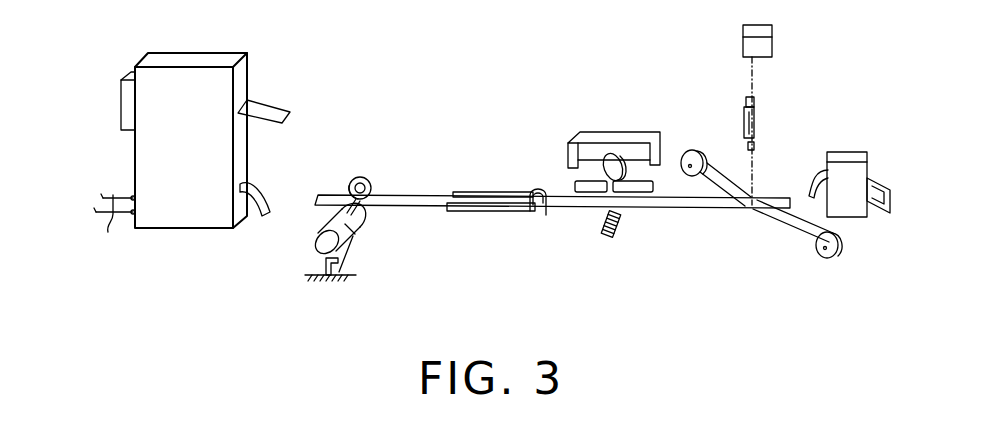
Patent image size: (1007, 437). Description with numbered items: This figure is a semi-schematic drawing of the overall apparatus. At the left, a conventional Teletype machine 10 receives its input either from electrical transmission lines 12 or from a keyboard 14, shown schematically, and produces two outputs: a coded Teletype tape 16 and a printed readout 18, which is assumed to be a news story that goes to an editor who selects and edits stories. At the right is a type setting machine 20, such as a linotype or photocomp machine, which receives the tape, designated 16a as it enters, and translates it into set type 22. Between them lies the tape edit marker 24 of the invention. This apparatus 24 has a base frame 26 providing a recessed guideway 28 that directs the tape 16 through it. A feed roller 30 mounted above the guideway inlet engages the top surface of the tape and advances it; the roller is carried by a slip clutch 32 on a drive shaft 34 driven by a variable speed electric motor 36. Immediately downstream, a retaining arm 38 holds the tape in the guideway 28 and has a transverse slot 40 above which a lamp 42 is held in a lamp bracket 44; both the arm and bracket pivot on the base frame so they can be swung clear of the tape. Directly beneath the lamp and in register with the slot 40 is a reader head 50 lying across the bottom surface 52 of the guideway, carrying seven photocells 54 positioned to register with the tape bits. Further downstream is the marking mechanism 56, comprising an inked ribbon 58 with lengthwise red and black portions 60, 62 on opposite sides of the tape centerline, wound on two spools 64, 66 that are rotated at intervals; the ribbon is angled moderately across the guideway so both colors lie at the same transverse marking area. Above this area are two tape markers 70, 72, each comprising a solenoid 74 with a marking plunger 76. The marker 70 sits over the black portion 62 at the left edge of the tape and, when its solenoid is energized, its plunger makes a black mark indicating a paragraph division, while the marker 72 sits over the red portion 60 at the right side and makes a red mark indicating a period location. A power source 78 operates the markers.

The Teletype machine 10 is at (196, 232).
The electrical transmission lines 12 is at (103, 220).
The keyboard 14 is at (121, 108).
The coded Teletype tape 16 is at (262, 218).
The Teletype tape entering the type setting machine 16a is at (818, 172).
The printed readout 18 is at (268, 112).
The type setting machine 20 is at (860, 152).
The set type 22 is at (888, 214).
The tape edit marker 24 is at (450, 149).
The base frame 26 is at (310, 273).
The recessed guideway 28 is at (463, 213).
The feed roller 30 is at (360, 177).
The slip clutch 32 is at (368, 196).
The drive shaft 34 is at (358, 216).
The variable speed electric motor 36 is at (348, 252).
The retaining arm 38 is at (575, 184).
The transverse slot 40 is at (658, 180).
The lamp 42 is at (616, 158).
The lamp bracket 44 is at (603, 140).
The reader head 50 is at (616, 236).
The bottom surface of the guideway 52 is at (544, 216).
The photocells 54 is at (620, 220).
The marking mechanism 56 is at (793, 93).
The inked ribbon 58 is at (768, 224).
The red portion of the ribbon 60 is at (790, 232).
The black portion of the ribbon 62 is at (728, 176).
The spool 64 is at (688, 152).
The spool 66 is at (826, 258).
The tape marker 70 is at (754, 102).
The tape marker 72 is at (746, 103).
The solenoid 74 is at (755, 124).
The marking plunger 76 is at (756, 148).
The power source 78 is at (770, 33).